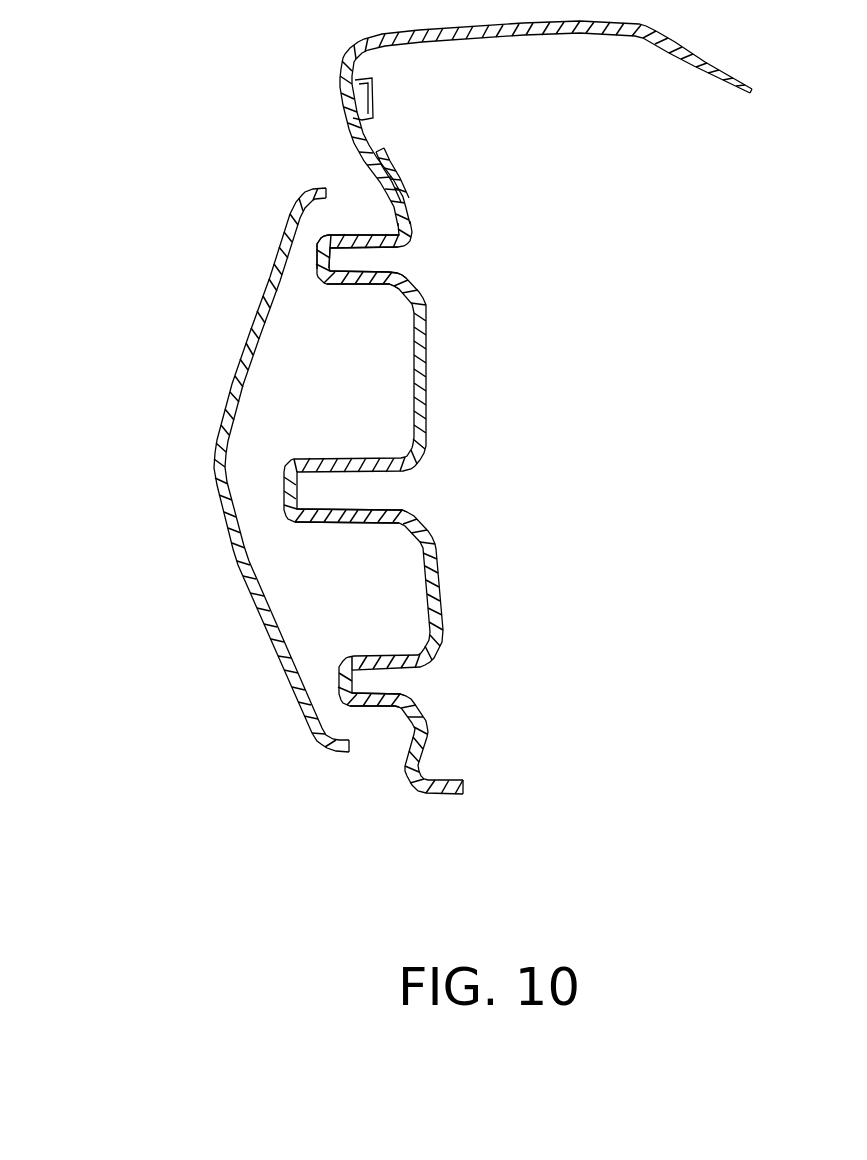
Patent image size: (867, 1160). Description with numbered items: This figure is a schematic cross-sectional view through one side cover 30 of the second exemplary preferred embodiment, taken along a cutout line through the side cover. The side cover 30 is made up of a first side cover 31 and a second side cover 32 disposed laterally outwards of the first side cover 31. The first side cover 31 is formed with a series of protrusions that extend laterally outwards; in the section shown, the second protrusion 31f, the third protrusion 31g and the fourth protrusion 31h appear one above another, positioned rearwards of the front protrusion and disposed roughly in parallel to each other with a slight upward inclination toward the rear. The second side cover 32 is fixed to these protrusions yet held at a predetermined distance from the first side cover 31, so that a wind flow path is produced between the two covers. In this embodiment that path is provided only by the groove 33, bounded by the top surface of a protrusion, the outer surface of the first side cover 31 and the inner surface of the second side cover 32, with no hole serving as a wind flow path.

The side cover 30 is at (432, 218).
The first side cover 31 is at (443, 402).
The second protrusion 31f is at (355, 285).
The third protrusion 31g is at (310, 524).
The fourth protrusion 31h is at (363, 712).
The second side cover 32 is at (240, 362).
The groove 33 is at (369, 226).